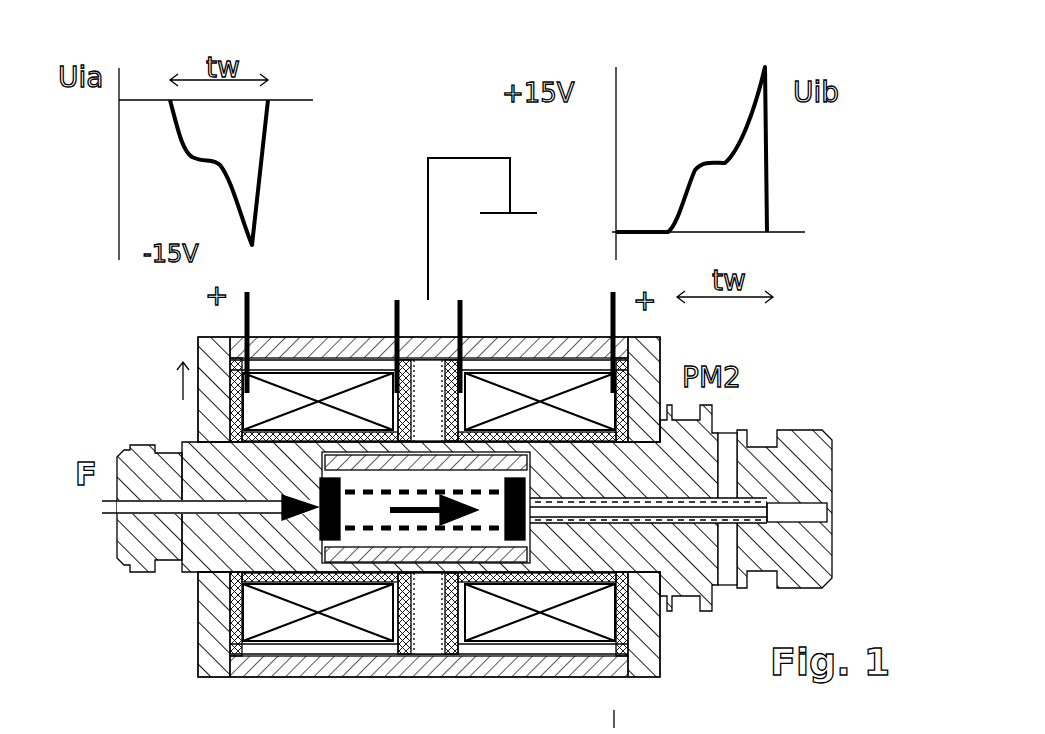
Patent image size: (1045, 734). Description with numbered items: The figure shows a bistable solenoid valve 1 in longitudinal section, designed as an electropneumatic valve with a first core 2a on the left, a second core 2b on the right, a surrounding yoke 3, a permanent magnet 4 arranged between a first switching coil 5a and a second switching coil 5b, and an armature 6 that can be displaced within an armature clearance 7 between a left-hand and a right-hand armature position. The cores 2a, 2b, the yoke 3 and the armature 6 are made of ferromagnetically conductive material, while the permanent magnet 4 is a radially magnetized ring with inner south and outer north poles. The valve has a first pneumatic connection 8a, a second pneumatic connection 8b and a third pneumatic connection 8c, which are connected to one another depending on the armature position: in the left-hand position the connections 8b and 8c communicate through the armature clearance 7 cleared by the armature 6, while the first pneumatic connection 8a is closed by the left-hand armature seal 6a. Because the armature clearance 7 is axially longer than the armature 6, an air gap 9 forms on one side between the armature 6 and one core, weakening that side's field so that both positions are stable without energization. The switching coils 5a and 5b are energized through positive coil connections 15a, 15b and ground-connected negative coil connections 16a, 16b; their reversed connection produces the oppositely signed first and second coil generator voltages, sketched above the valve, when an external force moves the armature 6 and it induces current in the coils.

The bistable solenoid valve 1 is at (790, 432).
The first core 2a is at (135, 445).
The second core 2b is at (832, 455).
The yoke 3 is at (662, 354).
The permanent magnet 4 is at (415, 645).
The first switching coil 5a is at (322, 385).
The second switching coil 5b is at (547, 385).
The armature 6 is at (347, 545).
The armature seal 6a is at (320, 545).
The armature clearance 7 is at (300, 548).
The first pneumatic connection 8a is at (117, 515).
The second pneumatic connection 8b is at (832, 510).
The third pneumatic connection 8c is at (725, 432).
The air gap 9 is at (313, 522).
The positive coil connection 15a is at (256, 325).
The positive coil connection 15b is at (614, 327).
The negative coil connection 16a is at (389, 327).
The negative coil connection 16b is at (473, 327).